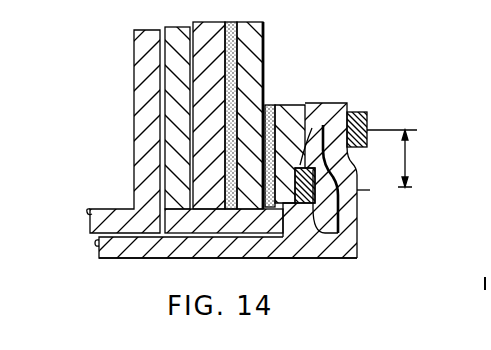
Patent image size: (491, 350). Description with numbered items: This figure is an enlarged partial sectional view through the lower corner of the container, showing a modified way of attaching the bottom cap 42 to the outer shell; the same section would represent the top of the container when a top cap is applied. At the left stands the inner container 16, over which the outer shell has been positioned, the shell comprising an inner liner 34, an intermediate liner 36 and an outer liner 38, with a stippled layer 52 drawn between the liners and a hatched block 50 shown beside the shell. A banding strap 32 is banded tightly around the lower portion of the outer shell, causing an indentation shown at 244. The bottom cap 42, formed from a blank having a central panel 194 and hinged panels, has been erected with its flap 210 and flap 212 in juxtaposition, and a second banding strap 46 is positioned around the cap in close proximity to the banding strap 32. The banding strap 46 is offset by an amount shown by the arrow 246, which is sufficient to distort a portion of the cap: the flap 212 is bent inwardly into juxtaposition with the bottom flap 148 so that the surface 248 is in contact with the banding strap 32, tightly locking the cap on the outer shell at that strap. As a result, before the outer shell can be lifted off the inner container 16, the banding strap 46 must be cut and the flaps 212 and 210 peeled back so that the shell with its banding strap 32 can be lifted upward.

The inner container 16 is at (150, 145).
The inner liner 34 is at (178, 72).
The intermediate liner 36 is at (200, 23).
The adhesive layer 52 is at (245, 22).
The outer liner 38 is at (255, 48).
The block 50 is at (297, 115).
The banding strap 46 is at (368, 127).
The surface 248 is at (357, 113).
The flap 212 is at (323, 125).
The bottom flap 148 is at (312, 128).
The flap 210 is at (345, 195).
The arrow 246 is at (406, 160).
The banding strap 32 is at (345, 247).
The central panel 194 is at (155, 246).
The indentation 244 is at (287, 248).
The bottom cap 42 is at (344, 267).